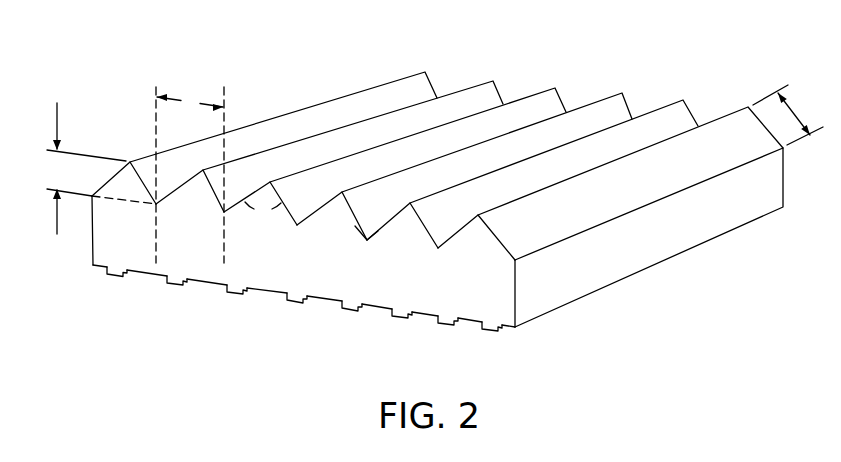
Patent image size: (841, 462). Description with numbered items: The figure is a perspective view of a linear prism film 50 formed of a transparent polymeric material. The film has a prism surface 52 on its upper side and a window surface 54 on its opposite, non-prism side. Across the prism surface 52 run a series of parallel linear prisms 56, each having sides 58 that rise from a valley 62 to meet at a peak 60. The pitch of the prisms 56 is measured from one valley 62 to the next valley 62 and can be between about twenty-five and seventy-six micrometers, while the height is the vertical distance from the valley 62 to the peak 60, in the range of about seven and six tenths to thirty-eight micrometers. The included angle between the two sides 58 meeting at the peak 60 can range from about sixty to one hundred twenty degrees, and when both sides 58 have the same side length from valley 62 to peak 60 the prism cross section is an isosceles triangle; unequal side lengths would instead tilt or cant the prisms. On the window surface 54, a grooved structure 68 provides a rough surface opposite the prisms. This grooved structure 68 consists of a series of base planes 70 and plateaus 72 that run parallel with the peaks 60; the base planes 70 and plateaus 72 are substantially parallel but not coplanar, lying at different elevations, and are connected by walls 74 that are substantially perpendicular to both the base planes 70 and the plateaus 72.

The linear prism film 50 is at (355, 64).
The prism surface 52 is at (723, 126).
The window surface 54 is at (113, 275).
The prisms 56 is at (602, 93).
The sides 58 is at (541, 88).
The peak 60 is at (131, 160).
The valley 62 is at (367, 243).
The grooved structure 68 is at (487, 334).
The base planes 70 is at (207, 284).
The plateaus 72 is at (298, 303).
The walls 74 is at (413, 315).